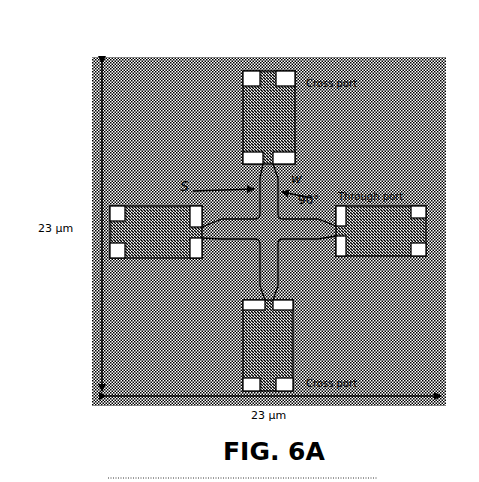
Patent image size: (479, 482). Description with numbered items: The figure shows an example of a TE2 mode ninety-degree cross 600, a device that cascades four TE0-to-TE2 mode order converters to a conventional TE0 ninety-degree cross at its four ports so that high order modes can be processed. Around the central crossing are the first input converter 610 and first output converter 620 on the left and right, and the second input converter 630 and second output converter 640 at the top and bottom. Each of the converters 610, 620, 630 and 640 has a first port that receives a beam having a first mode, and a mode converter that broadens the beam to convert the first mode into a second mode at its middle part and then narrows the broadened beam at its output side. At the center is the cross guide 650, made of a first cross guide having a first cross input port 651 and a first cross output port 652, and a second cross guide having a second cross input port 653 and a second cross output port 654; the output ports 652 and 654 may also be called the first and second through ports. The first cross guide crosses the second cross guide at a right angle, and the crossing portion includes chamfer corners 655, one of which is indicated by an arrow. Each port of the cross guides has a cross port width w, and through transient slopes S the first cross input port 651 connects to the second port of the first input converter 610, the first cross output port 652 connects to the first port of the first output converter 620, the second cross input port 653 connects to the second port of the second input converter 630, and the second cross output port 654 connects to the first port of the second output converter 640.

The TE2 mode 90-degree cross 600 is at (72, 63).
The first input converter 610 is at (148, 197).
The first output converter 620 is at (388, 250).
The second input converter 630 is at (233, 104).
The second output converter 640 is at (233, 335).
The cross guide 650 is at (261, 239).
The first cross input port 651 is at (216, 243).
The first cross output port 652 is at (289, 239).
The second cross input port 653 is at (282, 195).
The second cross output port 654 is at (274, 268).
The chamfer corners 655 is at (240, 240).